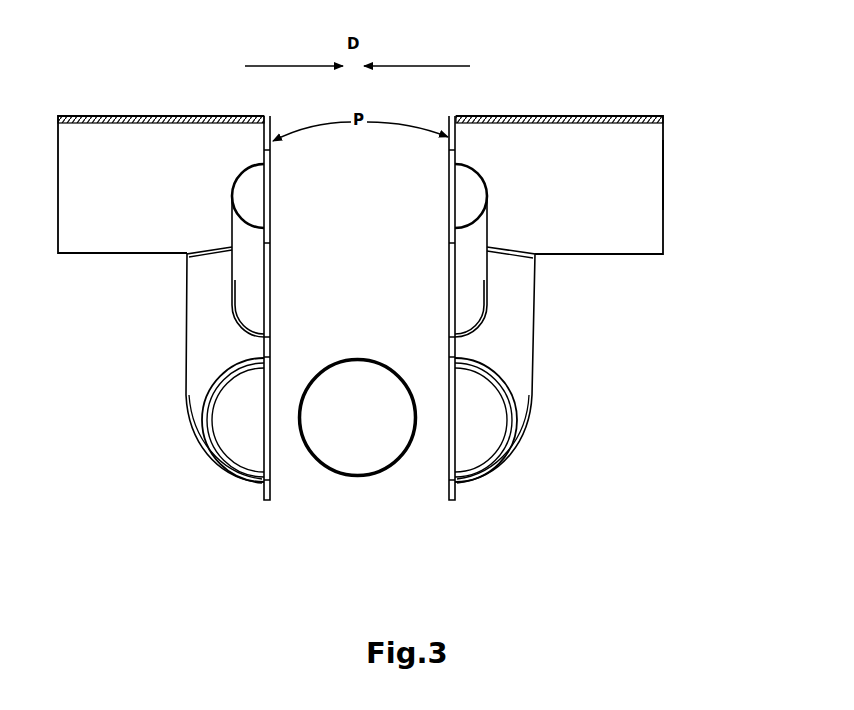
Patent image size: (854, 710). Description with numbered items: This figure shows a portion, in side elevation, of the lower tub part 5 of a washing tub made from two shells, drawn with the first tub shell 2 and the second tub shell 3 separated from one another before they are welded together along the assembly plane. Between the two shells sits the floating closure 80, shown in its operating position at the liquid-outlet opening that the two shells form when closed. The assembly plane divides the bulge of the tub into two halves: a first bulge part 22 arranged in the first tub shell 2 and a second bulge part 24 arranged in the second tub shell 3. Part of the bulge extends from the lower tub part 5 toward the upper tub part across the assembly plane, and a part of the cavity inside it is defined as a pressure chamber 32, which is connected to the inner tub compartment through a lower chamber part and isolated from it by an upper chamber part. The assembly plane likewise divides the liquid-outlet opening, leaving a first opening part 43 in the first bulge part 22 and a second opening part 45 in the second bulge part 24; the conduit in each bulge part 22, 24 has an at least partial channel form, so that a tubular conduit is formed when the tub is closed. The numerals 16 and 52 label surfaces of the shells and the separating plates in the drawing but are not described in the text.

The first tub shell 2 is at (587, 140).
The second tub shell 3 is at (158, 153).
The lower tub part 5 is at (600, 257).
The outer wall 16 is at (665, 175).
The first bulge part 22 is at (197, 372).
The second bulge part 24 is at (523, 388).
The pressure chamber 32 is at (464, 300).
The first opening part 43 is at (490, 462).
The second opening part 45 is at (240, 468).
The separating plate 52 is at (262, 443).
The floating closure 80 is at (372, 453).